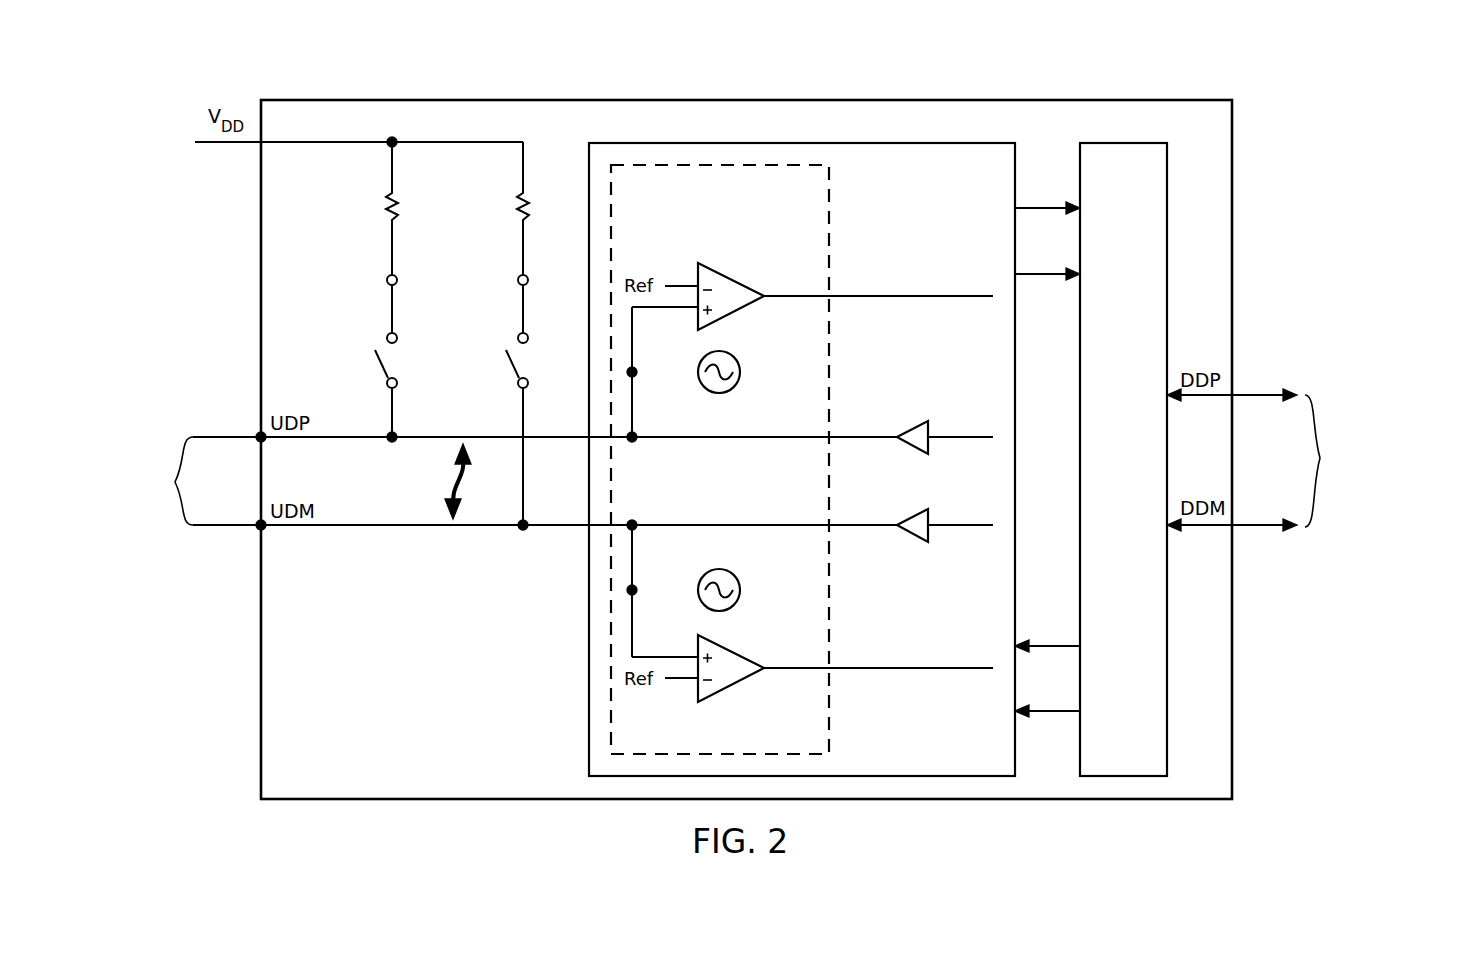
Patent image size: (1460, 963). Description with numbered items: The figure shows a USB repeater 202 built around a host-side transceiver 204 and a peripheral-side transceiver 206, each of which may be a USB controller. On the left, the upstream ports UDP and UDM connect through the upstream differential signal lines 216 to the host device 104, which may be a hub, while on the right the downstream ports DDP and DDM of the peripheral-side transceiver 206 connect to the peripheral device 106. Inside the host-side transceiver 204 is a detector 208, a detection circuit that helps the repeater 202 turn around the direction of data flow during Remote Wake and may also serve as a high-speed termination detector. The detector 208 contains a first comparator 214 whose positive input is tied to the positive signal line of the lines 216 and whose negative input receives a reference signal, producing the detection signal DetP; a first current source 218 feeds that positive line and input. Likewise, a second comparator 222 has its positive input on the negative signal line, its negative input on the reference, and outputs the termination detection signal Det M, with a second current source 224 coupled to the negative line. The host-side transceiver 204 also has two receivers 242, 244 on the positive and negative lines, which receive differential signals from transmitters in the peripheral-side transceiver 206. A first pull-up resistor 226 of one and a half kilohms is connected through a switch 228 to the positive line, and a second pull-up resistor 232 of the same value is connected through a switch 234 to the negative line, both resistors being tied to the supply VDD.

The repeater 202 is at (639, 95).
The host-side transceiver 204 is at (582, 563).
The peripheral-side transceiver 206 is at (1104, 473).
The detector 208 is at (700, 212).
The first comparator 214 is at (732, 278).
The upstream differential signal lines 216 is at (453, 483).
The first current source 218 is at (740, 365).
The second comparator 222 is at (732, 686).
The second current source 224 is at (740, 599).
The first 1.5 kΩ pull-up resistor 226 is at (386, 206).
The switch 228 is at (380, 367).
The second 1.5 kΩ pull-up resistor 232 is at (517, 206).
The switch 234 is at (511, 367).
The receiver 242 is at (908, 424).
The receiver 244 is at (908, 541).
The host device 104 is at (133, 481).
The peripheral device 106 is at (1374, 461).